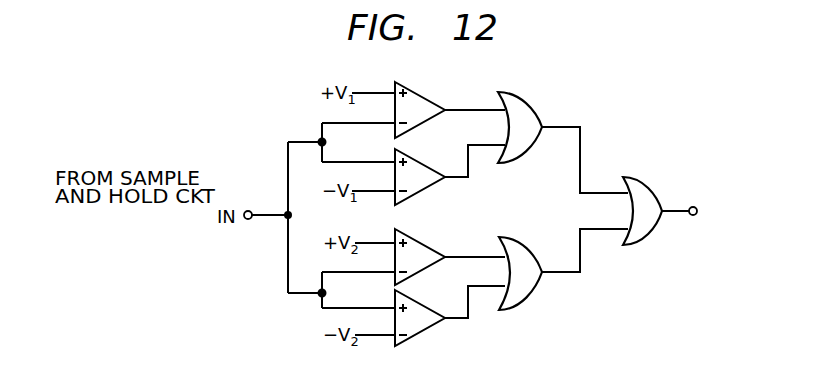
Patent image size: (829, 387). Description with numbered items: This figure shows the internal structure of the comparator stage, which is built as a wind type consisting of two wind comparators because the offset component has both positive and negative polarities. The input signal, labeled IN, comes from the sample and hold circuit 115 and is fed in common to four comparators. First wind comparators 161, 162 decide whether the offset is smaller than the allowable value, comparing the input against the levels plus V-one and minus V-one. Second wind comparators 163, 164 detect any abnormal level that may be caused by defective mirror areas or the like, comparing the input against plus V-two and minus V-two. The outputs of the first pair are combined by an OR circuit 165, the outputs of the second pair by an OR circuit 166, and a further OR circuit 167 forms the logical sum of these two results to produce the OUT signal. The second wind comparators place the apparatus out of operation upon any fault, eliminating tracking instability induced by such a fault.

The sample and hold circuit 115 is at (255, 199).
The first wind comparator 161 is at (418, 93).
The first wind comparator 162 is at (418, 159).
The second wind comparator 163 is at (418, 237).
The second wind comparator 164 is at (418, 300).
The OR circuit 165 is at (529, 101).
The OR circuit 166 is at (527, 243).
The OR circuit 167 is at (645, 184).